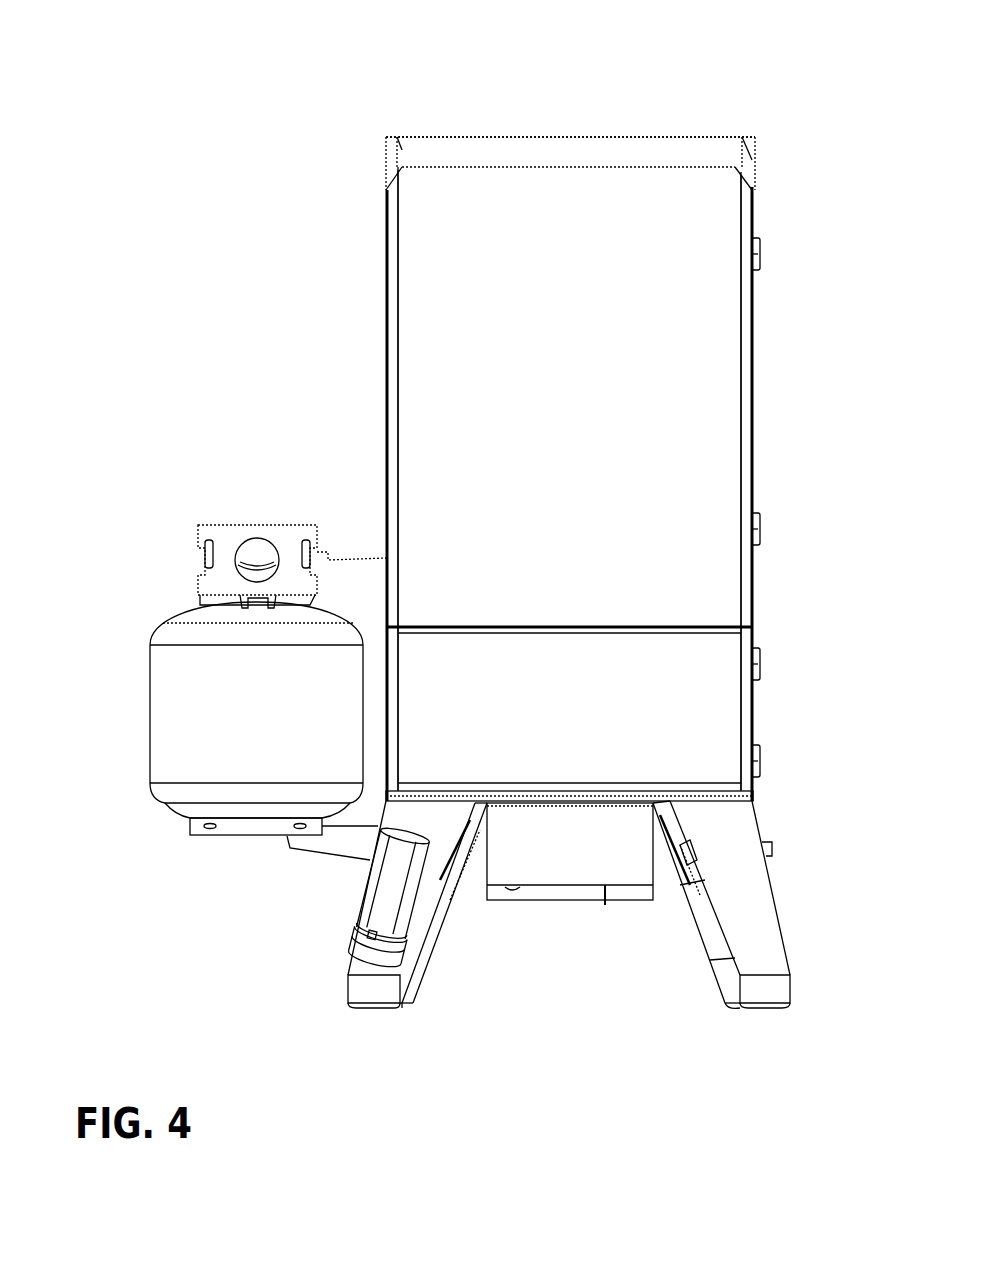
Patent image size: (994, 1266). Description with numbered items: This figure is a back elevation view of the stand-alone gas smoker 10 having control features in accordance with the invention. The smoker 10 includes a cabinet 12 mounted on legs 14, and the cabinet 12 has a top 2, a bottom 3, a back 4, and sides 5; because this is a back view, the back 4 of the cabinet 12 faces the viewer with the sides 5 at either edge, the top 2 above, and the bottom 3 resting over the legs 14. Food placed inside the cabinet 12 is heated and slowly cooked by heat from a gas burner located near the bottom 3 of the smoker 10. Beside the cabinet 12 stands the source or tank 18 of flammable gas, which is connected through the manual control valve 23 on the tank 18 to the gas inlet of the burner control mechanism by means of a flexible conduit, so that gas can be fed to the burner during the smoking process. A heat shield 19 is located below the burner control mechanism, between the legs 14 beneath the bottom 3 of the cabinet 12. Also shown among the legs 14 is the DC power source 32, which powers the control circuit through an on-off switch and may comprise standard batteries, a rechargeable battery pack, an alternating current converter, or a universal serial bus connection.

The top 2 is at (570, 97).
The bottom 3 is at (752, 793).
The back 4 is at (667, 513).
The sides 5 is at (387, 340).
The stand-alone gas smoker 10 is at (784, 106).
The cabinet 12 is at (753, 397).
The legs 14 is at (367, 988).
The source (tank) of flammable gas 18 is at (150, 630).
The heat shield 19 is at (568, 903).
The manual control valve 23 is at (250, 553).
The DC power source 32 is at (390, 898).